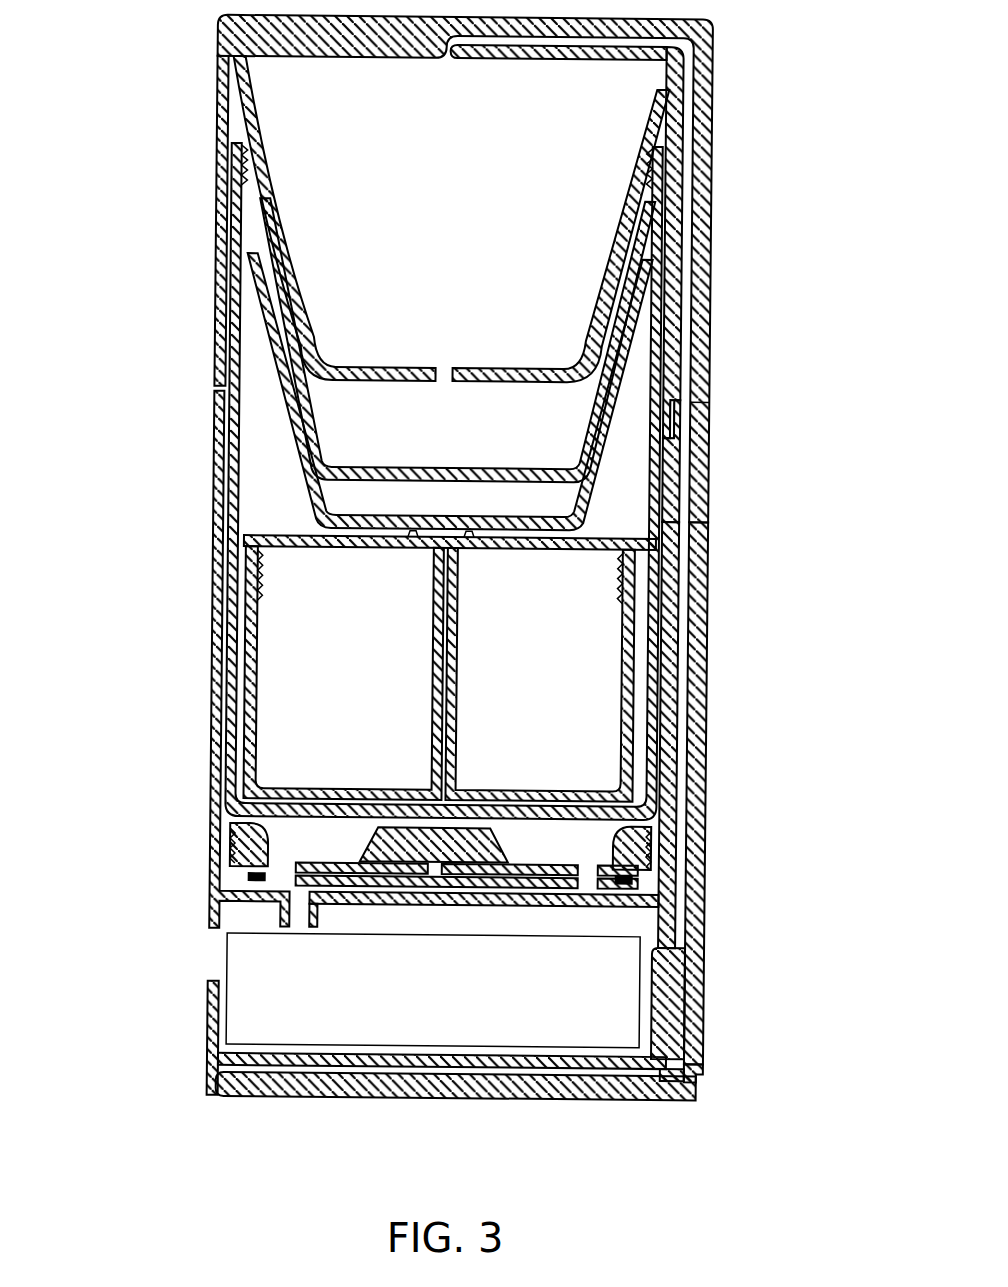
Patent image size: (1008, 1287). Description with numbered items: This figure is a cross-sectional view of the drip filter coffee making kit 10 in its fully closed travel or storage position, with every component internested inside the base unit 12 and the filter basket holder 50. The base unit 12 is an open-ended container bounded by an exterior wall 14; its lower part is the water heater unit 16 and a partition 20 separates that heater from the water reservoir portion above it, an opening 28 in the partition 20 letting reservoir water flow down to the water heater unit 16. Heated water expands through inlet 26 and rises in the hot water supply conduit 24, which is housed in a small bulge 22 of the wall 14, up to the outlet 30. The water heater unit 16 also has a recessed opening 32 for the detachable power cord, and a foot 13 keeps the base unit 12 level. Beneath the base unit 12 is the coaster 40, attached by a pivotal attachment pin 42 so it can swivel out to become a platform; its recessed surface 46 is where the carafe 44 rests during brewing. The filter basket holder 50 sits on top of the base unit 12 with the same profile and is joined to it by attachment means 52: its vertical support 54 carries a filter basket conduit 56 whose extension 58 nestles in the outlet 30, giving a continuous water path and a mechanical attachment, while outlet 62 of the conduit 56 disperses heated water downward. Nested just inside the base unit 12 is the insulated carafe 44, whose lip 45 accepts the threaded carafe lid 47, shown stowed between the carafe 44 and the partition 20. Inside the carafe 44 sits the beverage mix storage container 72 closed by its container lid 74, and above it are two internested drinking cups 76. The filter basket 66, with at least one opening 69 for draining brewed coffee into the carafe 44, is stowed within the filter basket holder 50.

The drip filter coffee making kit 10 is at (472, 595).
The filter basket holder 50 is at (549, 574).
The vertical support 54 is at (710, 222).
The outlet 62 is at (455, 58).
The filter basket conduit 56 is at (690, 328).
The extension 58 is at (692, 425).
The attachment means 52 is at (722, 406).
The bulge 22 is at (703, 592).
The inlet 26 is at (650, 953).
The attachment pin 42 is at (692, 1058).
The exterior wall 14 is at (439, 615).
The base unit 12 is at (206, 430).
The carafe 44 is at (238, 706).
The lip 45 is at (238, 160).
The filter basket 66 is at (243, 272).
The opening 69 is at (437, 378).
The drinking cups 76 is at (275, 365).
The container lid 74 is at (280, 535).
The beverage mix storage container 72 is at (312, 665).
The carafe lid 47 is at (246, 836).
The partition 20 is at (252, 903).
The opening 28 is at (301, 937).
The outlet 30 is at (683, 450).
The hot water supply conduit 24 is at (682, 800).
The water heater unit 16 is at (400, 999).
The recessed opening 32 is at (212, 965).
The foot 13 is at (210, 1085).
The recessed surface 46 is at (625, 1095).
The coaster 40 is at (300, 1097).